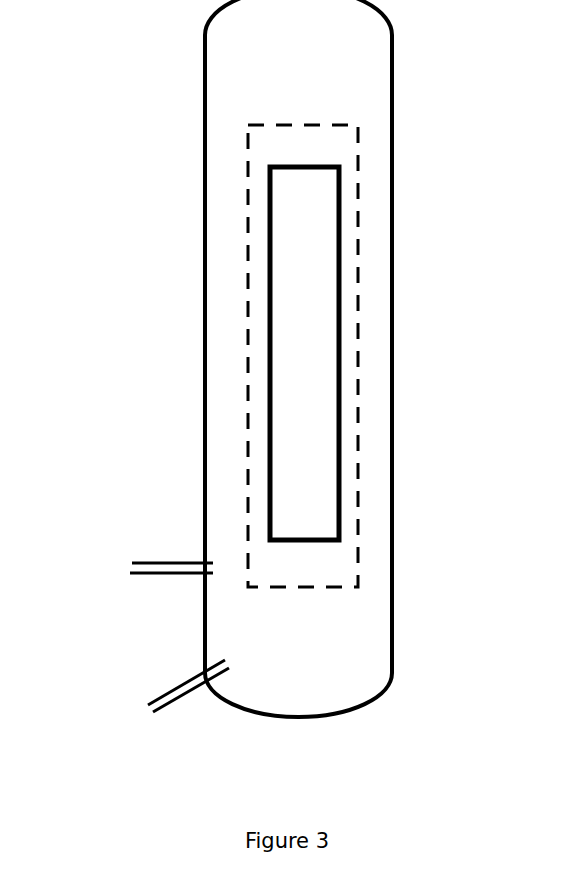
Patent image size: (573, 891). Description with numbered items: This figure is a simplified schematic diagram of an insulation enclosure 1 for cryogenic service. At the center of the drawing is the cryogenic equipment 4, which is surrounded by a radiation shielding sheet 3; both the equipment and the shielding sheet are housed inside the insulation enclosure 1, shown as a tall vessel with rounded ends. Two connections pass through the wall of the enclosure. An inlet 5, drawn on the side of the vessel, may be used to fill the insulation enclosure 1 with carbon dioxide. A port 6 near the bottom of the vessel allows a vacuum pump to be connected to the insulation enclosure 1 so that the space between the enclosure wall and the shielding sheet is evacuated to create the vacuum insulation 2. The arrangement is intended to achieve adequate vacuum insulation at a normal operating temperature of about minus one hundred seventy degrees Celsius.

The insulation enclosure 1 is at (393, 132).
The vacuum insulation 2 is at (370, 255).
The radiation shielding sheet 3 is at (357, 331).
The cryogenic equipment 4 is at (325, 454).
The inlet 5 is at (147, 562).
The port 6 is at (162, 694).